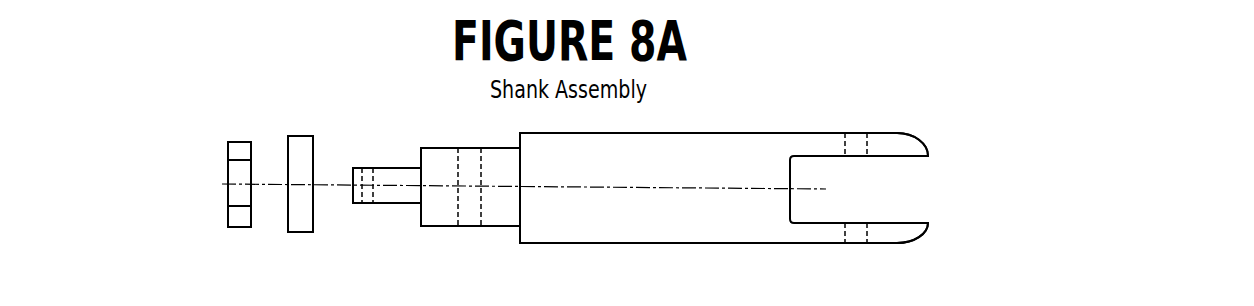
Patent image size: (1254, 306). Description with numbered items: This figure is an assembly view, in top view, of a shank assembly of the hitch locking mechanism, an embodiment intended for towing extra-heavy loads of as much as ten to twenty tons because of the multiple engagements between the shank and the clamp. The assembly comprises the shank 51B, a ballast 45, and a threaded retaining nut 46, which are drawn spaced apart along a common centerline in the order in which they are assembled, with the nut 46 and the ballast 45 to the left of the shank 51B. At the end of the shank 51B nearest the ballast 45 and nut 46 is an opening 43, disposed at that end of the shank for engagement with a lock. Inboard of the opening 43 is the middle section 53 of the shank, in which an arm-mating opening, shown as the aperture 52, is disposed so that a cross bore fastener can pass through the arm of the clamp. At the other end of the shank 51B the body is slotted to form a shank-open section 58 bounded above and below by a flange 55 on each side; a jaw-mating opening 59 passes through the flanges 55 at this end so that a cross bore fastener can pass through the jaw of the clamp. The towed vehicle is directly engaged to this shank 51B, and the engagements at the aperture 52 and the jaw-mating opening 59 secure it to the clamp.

The opening 43 is at (417, 260).
The ballast 45 is at (298, 223).
The threaded retaining nut 46 is at (242, 218).
The shank 51B is at (773, 233).
The arm-mating opening 52 is at (468, 213).
The middle section 53 is at (428, 163).
The flange 55 is at (897, 145).
The shank-open section 58 is at (870, 192).
The jaw-mating opening 59 is at (852, 148).